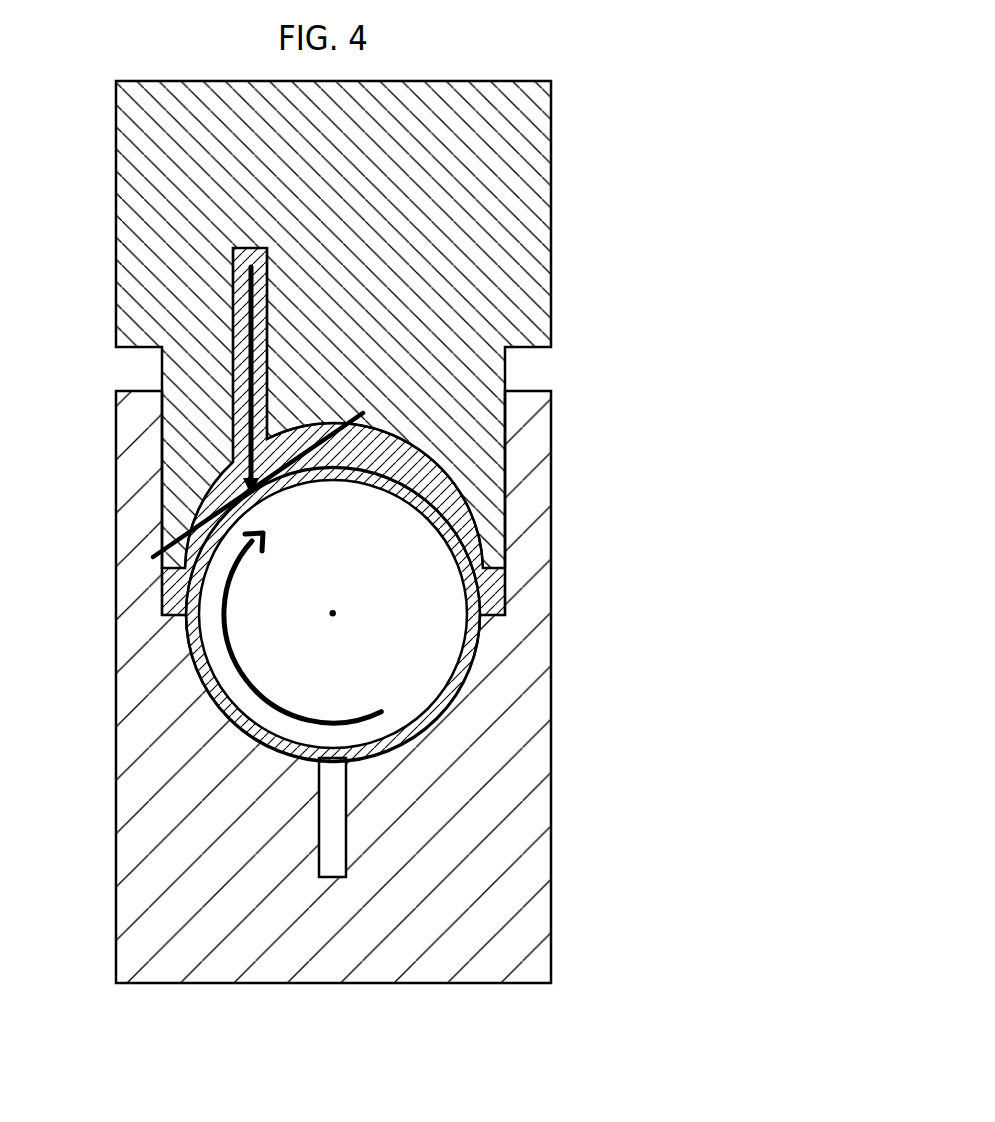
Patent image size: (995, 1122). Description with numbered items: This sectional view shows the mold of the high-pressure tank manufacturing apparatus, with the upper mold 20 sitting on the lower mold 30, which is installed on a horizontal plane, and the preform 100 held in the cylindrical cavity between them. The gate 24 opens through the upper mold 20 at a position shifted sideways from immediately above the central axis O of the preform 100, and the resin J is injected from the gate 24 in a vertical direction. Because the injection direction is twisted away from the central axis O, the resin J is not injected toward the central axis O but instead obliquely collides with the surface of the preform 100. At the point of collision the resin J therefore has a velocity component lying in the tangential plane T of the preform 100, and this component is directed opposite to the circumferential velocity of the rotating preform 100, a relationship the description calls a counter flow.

The upper mold 20 is at (537, 183).
The lower mold 30 is at (520, 889).
The resin J is at (453, 501).
The preform 100 is at (467, 663).
The gate 24 is at (240, 486).
The tangential plane T is at (162, 548).
The central axis O is at (344, 615).